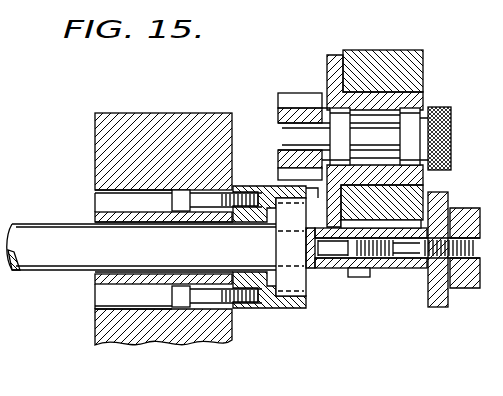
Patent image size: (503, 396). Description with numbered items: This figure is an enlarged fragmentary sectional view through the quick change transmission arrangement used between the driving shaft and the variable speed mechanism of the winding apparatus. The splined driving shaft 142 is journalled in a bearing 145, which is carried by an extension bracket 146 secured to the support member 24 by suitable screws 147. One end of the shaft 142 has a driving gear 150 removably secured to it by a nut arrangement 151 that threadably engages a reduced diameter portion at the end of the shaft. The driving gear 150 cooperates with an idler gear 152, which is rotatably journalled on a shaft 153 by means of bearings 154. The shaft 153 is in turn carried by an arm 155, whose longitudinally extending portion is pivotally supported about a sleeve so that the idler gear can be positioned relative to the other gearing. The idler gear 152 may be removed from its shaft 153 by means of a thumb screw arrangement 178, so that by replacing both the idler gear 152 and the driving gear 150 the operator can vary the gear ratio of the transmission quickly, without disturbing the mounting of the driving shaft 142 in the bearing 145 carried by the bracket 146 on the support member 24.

The support member 24 is at (167, 118).
The splined driving shaft 142 is at (62, 232).
The bearing 145 is at (306, 306).
The extension bracket 146 is at (268, 308).
The screws 147 is at (198, 294).
The driving gear 150 is at (363, 270).
The nut arrangement 151 is at (465, 214).
The idler gear 152 is at (417, 79).
The shaft 153 is at (292, 135).
The bearings 154 is at (410, 135).
The arm 155 is at (282, 112).
The thumb screw arrangement 178 is at (452, 117).